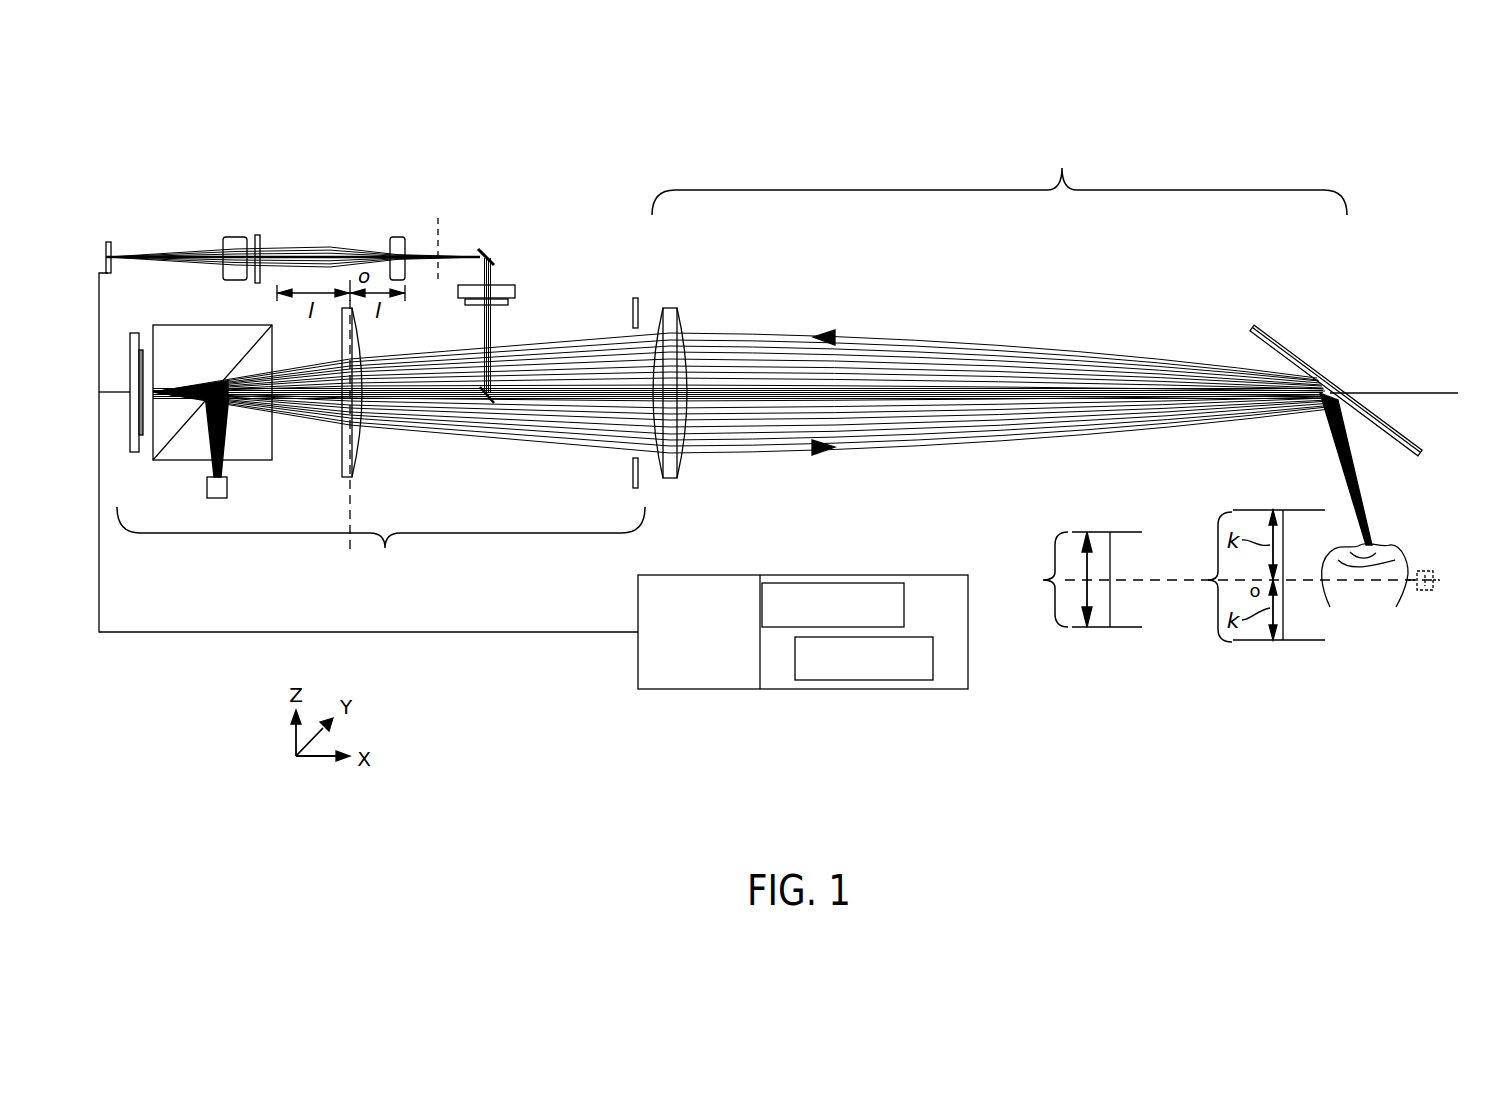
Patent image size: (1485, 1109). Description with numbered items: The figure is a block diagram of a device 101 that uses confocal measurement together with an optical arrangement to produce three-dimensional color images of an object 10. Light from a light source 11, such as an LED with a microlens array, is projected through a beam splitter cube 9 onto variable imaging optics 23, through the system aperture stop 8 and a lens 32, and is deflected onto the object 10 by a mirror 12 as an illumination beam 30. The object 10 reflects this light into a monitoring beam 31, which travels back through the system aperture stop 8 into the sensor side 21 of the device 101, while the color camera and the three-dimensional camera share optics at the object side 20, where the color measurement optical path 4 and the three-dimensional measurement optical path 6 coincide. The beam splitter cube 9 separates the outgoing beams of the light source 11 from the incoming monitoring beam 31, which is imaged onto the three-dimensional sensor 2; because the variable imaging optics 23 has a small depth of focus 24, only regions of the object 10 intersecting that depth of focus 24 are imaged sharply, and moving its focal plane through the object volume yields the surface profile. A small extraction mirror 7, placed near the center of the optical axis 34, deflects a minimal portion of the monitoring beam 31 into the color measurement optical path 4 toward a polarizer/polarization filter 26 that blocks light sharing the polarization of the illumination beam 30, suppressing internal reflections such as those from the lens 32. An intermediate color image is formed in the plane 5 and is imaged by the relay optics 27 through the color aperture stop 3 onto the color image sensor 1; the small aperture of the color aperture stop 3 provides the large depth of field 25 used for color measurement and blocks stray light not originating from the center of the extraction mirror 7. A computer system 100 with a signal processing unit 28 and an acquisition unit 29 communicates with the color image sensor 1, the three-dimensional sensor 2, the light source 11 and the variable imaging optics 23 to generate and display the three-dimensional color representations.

The color image sensor 1 is at (108, 240).
The 3D sensor 2 is at (137, 452).
The color aperture stop 3 is at (257, 235).
The color measurement optical path 4 is at (330, 252).
The plane 5 is at (440, 220).
The 3D measurement optical path 6 is at (420, 438).
The extraction mirror 7 is at (485, 400).
The system aperture stop 8 is at (636, 298).
The beam splitter cube 9 is at (193, 325).
The object 10 is at (1395, 560).
The light source 11 is at (228, 490).
The mirror 12 is at (1282, 337).
The object side 20 is at (999, 176).
The sensor side 21 is at (381, 546).
The variable imaging optics 23 is at (342, 455).
The depth of focus 24 is at (1440, 580).
The depth of field 25 is at (1220, 579).
The polarizer/polarization filter 26 is at (540, 300).
The relay optics 27 is at (224, 237).
The signal preprocessing or processing unit 28 is at (833, 605).
The acquisition unit 29 is at (864, 658).
The illumination beam 30 is at (938, 438).
The monitoring beam 31 is at (942, 348).
The lens 32 is at (690, 318).
The optical axis 34 is at (1433, 392).
The computer system 100 is at (803, 632).
The device 101 is at (743, 160).